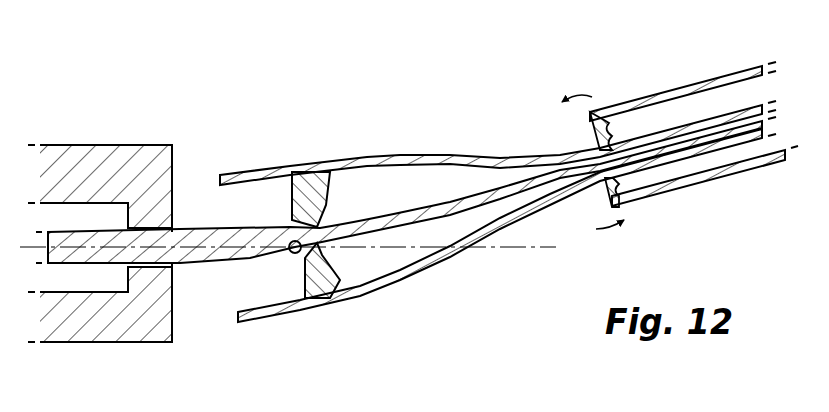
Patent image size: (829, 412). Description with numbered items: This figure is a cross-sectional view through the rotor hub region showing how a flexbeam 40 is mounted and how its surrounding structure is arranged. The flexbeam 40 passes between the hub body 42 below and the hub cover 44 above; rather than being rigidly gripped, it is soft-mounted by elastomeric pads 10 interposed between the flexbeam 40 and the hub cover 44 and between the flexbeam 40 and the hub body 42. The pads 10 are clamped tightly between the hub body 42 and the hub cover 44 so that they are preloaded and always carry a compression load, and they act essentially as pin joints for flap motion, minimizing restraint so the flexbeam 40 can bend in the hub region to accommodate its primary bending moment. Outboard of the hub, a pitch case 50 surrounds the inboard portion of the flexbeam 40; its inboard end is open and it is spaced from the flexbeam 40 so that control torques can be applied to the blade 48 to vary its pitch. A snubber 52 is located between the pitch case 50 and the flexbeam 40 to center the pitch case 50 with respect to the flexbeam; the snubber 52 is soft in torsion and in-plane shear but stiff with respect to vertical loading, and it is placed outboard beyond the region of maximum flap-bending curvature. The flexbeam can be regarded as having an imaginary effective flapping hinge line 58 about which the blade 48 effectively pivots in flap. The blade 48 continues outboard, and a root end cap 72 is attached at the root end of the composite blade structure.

The elastomeric pad 10 is at (145, 222).
The flexbeam 40 is at (237, 263).
The hub body 42 is at (130, 332).
The hub cover 44 is at (152, 153).
The blade 48 is at (706, 48).
The pitch case 50 is at (458, 262).
The snubber 52 is at (331, 174).
The effective flapping hinge line 58 is at (295, 240).
The root end cap 72 is at (590, 131).